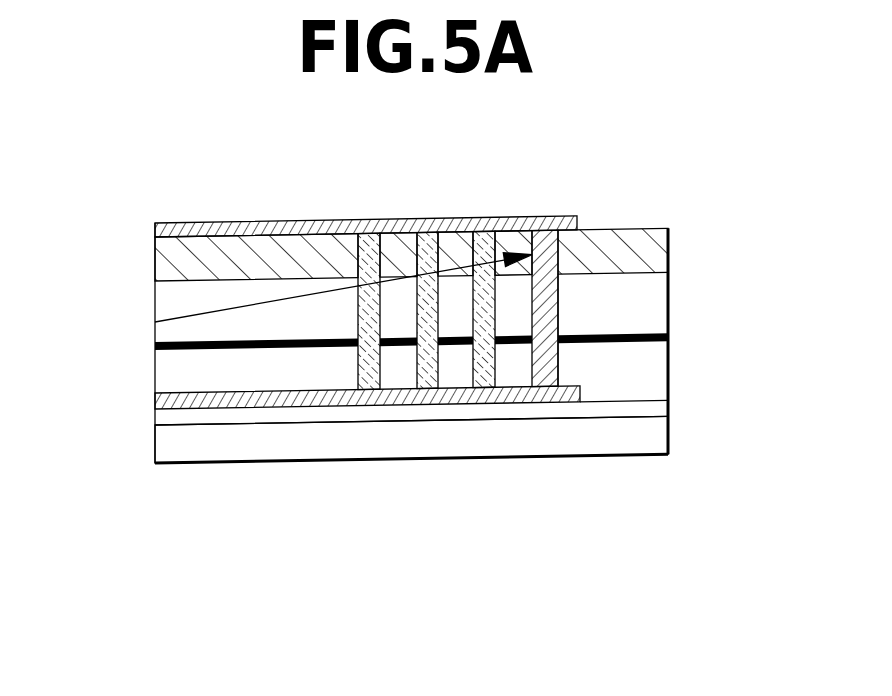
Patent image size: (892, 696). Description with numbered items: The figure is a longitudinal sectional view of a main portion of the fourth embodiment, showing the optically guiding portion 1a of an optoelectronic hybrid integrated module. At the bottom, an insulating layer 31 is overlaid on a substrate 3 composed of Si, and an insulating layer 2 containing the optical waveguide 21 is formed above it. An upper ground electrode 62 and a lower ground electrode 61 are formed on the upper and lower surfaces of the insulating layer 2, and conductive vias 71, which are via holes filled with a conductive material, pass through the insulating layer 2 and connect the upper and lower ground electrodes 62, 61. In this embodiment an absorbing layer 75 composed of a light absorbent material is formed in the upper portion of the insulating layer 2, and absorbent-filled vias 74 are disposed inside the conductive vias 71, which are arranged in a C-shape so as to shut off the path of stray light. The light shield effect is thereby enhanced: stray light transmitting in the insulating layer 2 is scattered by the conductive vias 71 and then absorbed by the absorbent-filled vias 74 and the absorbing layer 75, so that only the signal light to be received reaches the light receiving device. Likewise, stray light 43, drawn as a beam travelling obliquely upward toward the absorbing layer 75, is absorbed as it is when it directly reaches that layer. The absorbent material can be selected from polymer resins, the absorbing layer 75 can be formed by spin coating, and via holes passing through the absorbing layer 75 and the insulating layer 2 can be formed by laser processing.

The optically guiding portion 1a is at (448, 556).
The insulating layer 2 is at (653, 288).
The substrate 3 is at (250, 443).
The optical waveguide 21 is at (648, 330).
The insulating layer 31 is at (183, 417).
The stray light 43 is at (187, 313).
The lower ground electrode 61 is at (530, 402).
The upper ground electrode 62 is at (348, 222).
The conductive vias 71 is at (560, 363).
The absorbent-filled vias 74 is at (363, 368).
The absorbing layer 75 is at (248, 247).